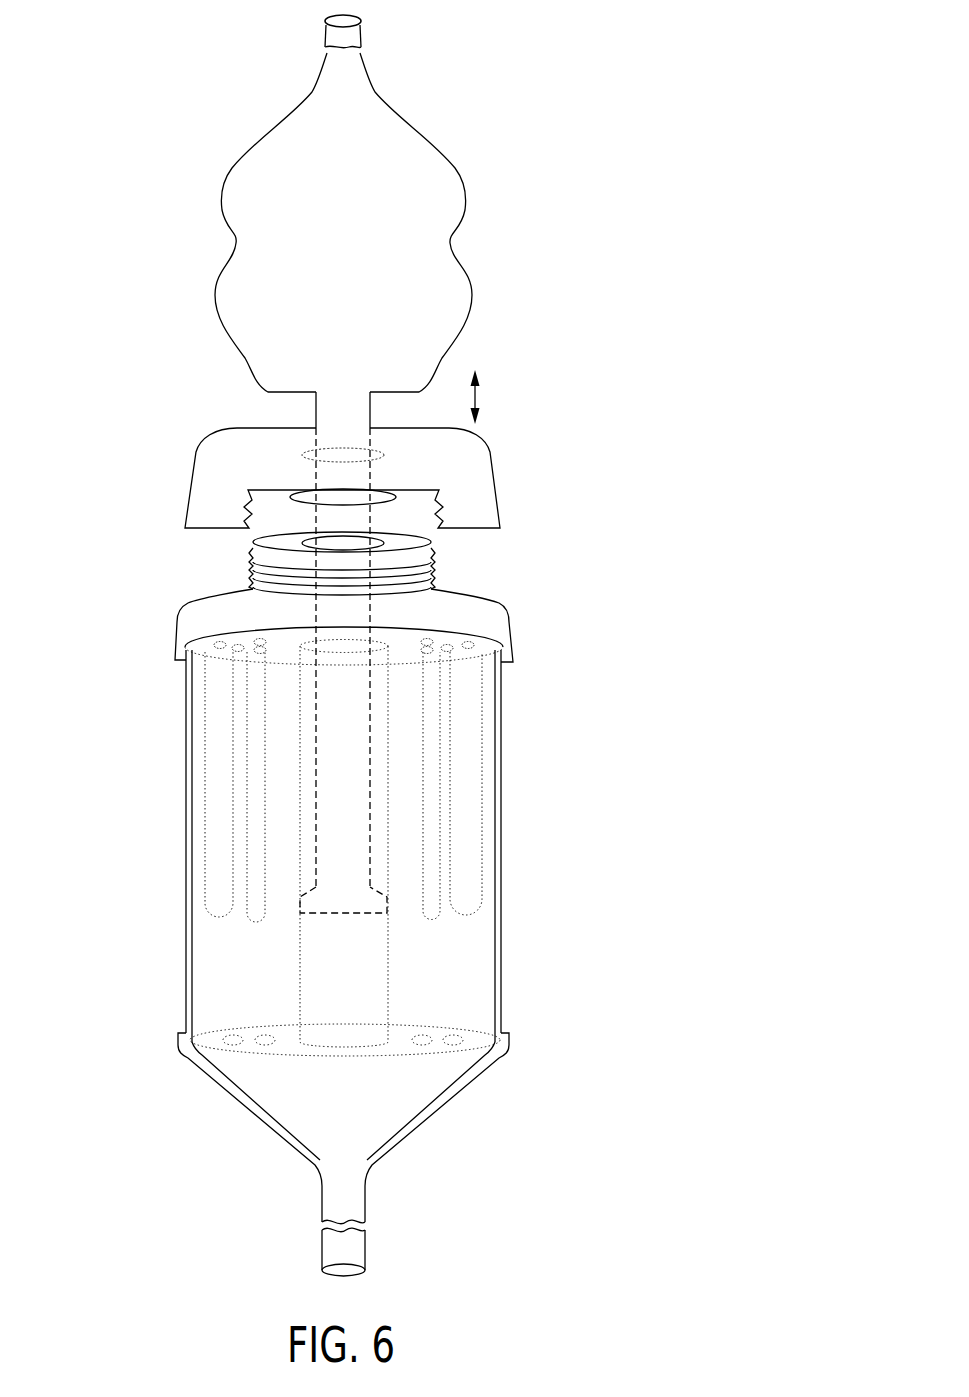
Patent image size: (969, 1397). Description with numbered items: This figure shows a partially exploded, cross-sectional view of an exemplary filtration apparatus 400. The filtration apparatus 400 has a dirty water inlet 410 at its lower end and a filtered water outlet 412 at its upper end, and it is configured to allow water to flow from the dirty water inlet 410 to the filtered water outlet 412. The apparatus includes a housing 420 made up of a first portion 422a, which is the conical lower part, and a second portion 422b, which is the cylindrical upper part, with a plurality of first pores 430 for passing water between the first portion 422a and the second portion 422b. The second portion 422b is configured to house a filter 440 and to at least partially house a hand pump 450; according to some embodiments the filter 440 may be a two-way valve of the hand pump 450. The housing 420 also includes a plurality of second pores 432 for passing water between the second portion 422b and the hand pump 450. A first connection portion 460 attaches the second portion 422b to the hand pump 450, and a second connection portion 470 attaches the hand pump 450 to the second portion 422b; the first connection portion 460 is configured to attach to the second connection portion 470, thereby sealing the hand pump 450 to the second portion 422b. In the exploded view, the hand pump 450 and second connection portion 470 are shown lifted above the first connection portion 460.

The filtration apparatus 400 is at (676, 95).
The dirty water inlet 410 is at (367, 1237).
The filtered water outlet 412 is at (360, 33).
The housing 420 is at (503, 962).
The first portion 422a is at (293, 1110).
The second portion 422b is at (215, 968).
The first pores 430 is at (458, 1042).
The second pores 432 is at (205, 643).
The filter 440 is at (482, 788).
The hand pump 450 is at (465, 192).
The first connection portion 460 is at (511, 642).
The second connection portion 470 is at (493, 467).